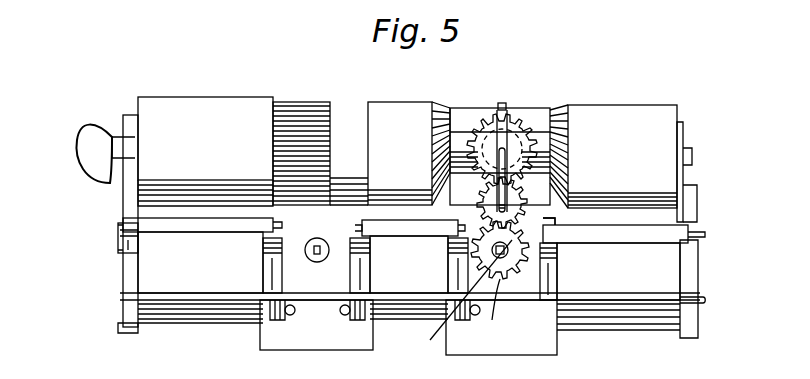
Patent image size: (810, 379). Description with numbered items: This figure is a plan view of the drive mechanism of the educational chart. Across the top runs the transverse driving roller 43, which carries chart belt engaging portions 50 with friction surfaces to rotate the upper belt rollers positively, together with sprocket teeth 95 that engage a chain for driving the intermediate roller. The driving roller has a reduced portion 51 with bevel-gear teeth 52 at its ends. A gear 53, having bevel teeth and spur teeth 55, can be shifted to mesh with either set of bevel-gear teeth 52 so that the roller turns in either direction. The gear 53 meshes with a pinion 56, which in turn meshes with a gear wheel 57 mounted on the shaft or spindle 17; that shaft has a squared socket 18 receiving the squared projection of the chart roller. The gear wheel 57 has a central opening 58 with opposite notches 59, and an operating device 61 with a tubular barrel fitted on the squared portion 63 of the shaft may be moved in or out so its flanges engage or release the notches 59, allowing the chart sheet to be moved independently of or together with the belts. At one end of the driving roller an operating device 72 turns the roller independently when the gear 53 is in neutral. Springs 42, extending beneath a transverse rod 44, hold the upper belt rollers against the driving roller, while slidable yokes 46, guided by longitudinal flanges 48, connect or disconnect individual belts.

The shaft or spindle 17 is at (317, 238).
The squared socket 18 is at (490, 224).
The springs 42 is at (125, 272).
The transverse driving roller 43 is at (676, 85).
The transverse rod 44 is at (210, 302).
The slidable yokes 46 is at (238, 222).
The longitudinal flanges 48 is at (350, 270).
The chart belt engaging portions 50 is at (198, 103).
The reduced portion 51 is at (468, 140).
The bevel-gear teeth 52 is at (437, 100).
The gear 53 is at (560, 108).
The spur teeth 55 is at (500, 112).
The pinion 56 is at (568, 182).
The gear wheel 57 is at (505, 304).
The central opening 58 is at (458, 303).
The opposite notches 59 is at (490, 250).
The operating device 61 is at (556, 228).
The squared portion 63 is at (513, 135).
The operating device 72 is at (92, 162).
The sprocket teeth 95 is at (295, 120).